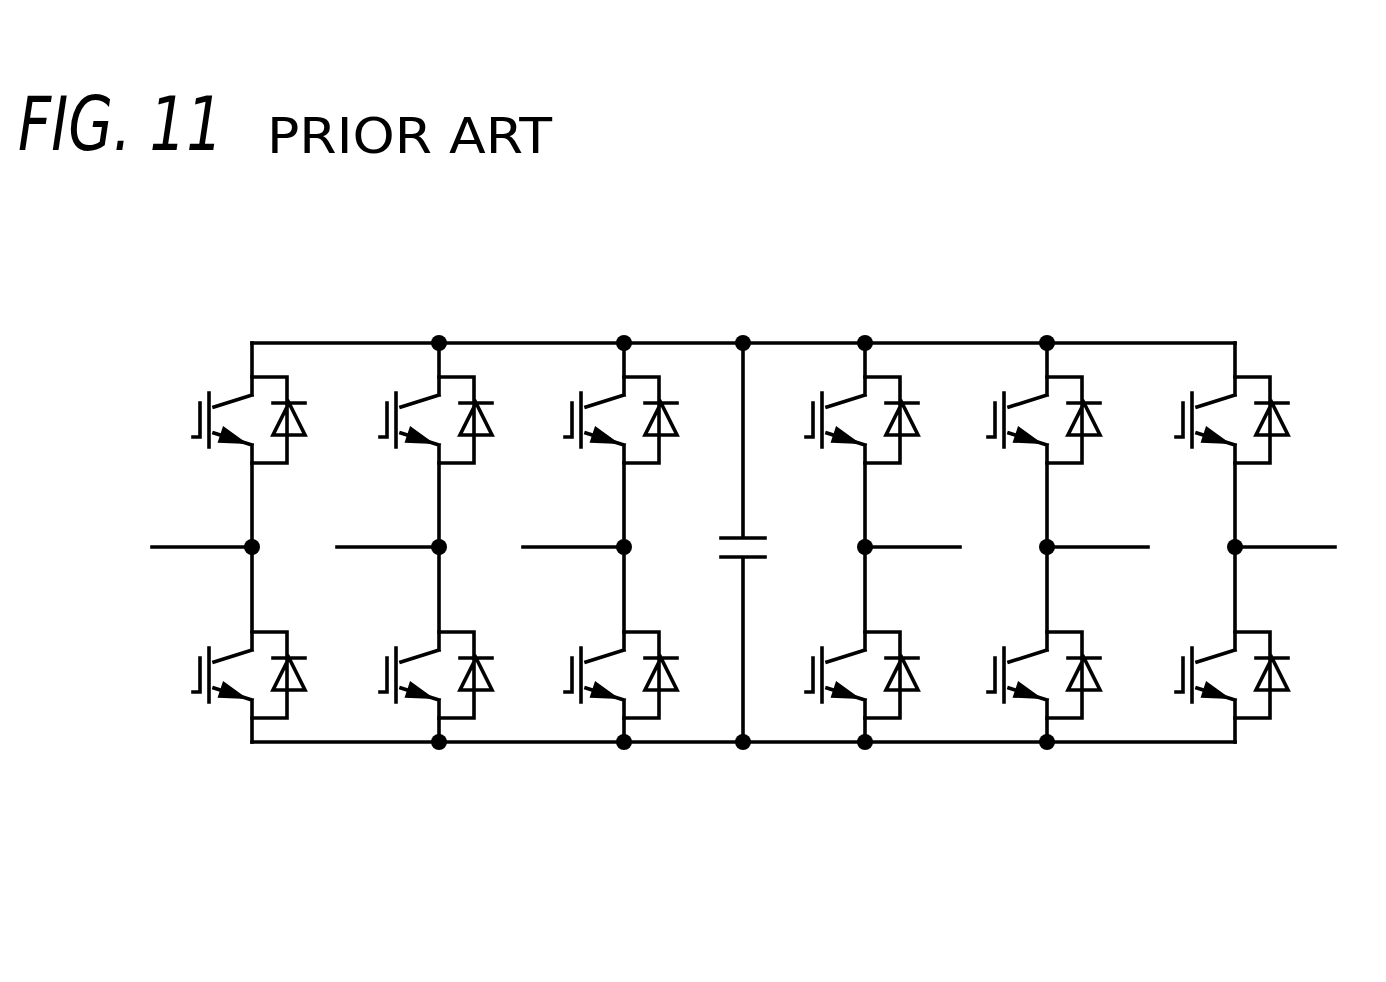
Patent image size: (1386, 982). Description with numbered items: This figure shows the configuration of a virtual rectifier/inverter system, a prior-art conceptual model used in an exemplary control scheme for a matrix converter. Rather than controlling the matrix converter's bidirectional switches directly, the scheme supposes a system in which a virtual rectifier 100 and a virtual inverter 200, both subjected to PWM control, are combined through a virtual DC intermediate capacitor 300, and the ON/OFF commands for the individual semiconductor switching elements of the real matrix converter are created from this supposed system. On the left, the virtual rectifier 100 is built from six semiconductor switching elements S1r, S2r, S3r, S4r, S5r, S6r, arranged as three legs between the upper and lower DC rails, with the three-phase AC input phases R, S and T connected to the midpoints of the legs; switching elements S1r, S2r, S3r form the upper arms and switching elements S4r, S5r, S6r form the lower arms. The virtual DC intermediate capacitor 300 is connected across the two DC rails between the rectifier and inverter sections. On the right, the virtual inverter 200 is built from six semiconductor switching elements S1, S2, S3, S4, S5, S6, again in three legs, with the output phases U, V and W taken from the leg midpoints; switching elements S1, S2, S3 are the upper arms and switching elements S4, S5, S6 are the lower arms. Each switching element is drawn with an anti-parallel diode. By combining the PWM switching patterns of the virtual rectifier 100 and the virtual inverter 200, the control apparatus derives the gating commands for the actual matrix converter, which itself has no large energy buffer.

The virtual rectifier 100 is at (683, 330).
The virtual inverter 200 is at (815, 330).
The virtual DC intermediate capacitor 300 is at (732, 566).
The semiconductor switching element S1r is at (229, 420).
The semiconductor switching element S2r is at (416, 420).
The semiconductor switching element S3r is at (601, 420).
The semiconductor switching element S4r is at (229, 675).
The semiconductor switching element S5r is at (416, 675).
The semiconductor switching element S6r is at (601, 675).
The semiconductor switching element S1 is at (844, 420).
The semiconductor switching element S2 is at (1026, 420).
The semiconductor switching element S3 is at (1211, 420).
The semiconductor switching element S4 is at (844, 675).
The semiconductor switching element S5 is at (1026, 675).
The semiconductor switching element S6 is at (1211, 675).